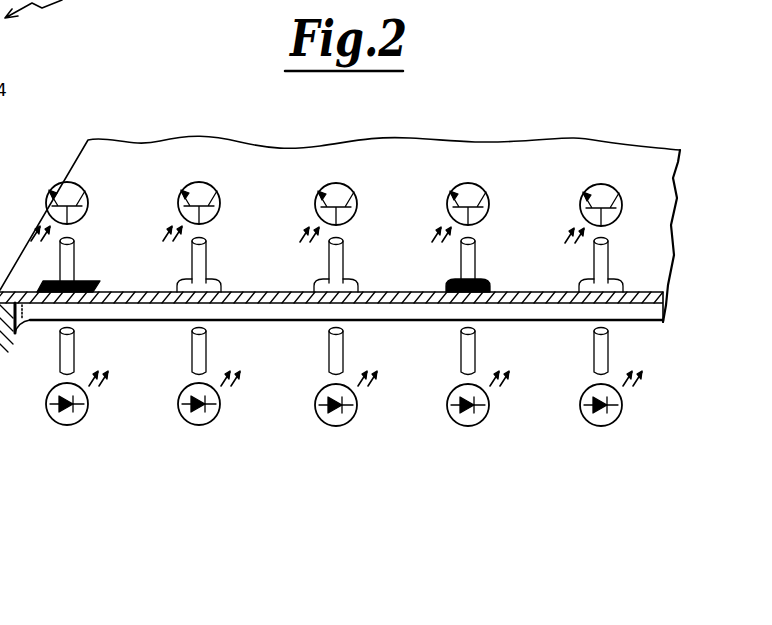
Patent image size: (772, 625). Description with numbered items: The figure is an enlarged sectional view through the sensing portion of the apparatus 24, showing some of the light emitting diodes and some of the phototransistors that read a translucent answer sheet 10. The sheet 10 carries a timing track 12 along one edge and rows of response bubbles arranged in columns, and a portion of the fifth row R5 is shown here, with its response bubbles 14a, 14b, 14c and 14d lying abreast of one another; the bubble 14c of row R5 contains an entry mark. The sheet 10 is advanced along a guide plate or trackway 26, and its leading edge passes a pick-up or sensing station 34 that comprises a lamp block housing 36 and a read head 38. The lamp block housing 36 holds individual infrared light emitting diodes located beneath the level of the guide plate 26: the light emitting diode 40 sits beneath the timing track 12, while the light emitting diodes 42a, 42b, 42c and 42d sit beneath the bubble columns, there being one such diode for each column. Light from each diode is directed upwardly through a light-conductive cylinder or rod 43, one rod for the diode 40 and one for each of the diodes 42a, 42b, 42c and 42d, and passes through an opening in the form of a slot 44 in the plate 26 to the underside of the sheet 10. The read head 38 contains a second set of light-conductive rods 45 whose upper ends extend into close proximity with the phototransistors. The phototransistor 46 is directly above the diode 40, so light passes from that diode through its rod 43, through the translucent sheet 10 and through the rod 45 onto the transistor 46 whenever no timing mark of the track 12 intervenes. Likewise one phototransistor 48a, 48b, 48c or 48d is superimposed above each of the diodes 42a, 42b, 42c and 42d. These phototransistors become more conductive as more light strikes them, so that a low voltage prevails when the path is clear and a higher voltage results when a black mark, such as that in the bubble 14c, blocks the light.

The answer sheet 10 is at (315, 148).
The timing track 12 is at (97, 282).
The response bubble 14a is at (220, 283).
The response bubble 14b is at (356, 283).
The response bubble 14c is at (453, 283).
The response bubble 14d is at (612, 284).
The fifth row R5 is at (646, 282).
The apparatus 24 is at (223, 482).
The guide plate 26 is at (8, 333).
The sensing station 34 is at (372, 326).
The lamp block housing 36 is at (359, 415).
The read head 38 is at (322, 170).
The light emitting diode 40 is at (80, 421).
The light emitting diode 42a is at (212, 421).
The light emitting diode 42b is at (314, 405).
The light emitting diode 42c is at (482, 421).
The light emitting diode 42d is at (615, 421).
The light-conductive rod 43 is at (76, 347).
The slot 44 is at (252, 313).
The light-conductive rod 45 is at (75, 256).
The phototransistor 46 is at (57, 184).
The phototransistor 48a is at (205, 183).
The phototransistor 48b is at (322, 186).
The phototransistor 48c is at (485, 185).
The phototransistor 48d is at (607, 184).